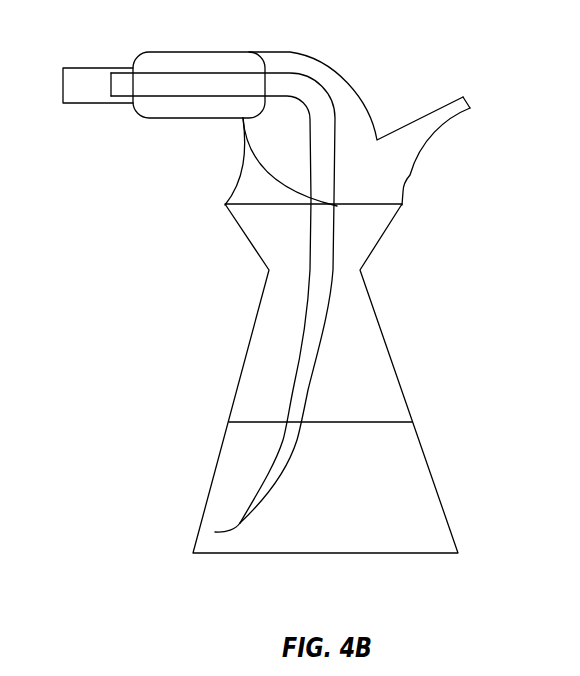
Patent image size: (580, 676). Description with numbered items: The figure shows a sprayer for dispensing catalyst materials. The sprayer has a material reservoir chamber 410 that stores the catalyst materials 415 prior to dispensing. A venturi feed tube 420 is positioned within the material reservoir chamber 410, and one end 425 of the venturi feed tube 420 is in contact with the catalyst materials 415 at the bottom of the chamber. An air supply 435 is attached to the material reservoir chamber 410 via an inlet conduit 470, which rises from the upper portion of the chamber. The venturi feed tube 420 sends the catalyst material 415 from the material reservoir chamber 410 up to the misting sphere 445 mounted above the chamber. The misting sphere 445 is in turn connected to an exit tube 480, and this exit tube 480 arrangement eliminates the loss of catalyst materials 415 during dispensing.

The material reservoir chamber 410 is at (400, 452).
The catalyst materials 415 is at (425, 508).
The venturi feed tube 420 is at (258, 498).
The end 425 is at (242, 525).
The air supply 435 is at (471, 104).
The misting sphere 445 is at (213, 58).
The inlet conduit 470 is at (417, 130).
The exit tube 480 is at (88, 78).